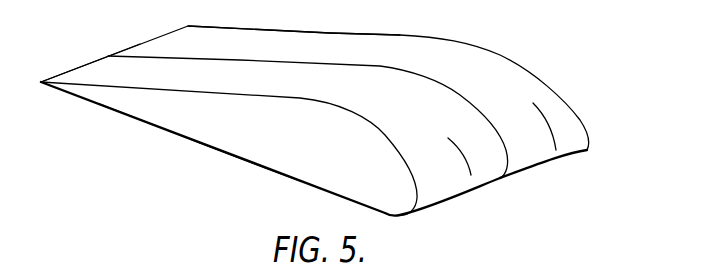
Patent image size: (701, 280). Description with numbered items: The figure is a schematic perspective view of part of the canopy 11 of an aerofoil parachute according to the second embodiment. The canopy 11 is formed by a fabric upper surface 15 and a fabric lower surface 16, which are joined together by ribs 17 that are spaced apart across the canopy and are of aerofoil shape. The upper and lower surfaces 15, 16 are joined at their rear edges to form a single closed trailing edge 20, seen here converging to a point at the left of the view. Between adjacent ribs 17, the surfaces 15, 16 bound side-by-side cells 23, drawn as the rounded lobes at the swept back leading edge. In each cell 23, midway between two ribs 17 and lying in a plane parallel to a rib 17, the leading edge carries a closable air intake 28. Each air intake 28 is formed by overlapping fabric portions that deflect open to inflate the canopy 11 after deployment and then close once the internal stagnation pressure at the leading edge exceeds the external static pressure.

The canopy 11 is at (443, 34).
The upper surface 15 is at (348, 48).
The lower surface 16 is at (228, 159).
The ribs 17 is at (160, 113).
The trailing edge 20 is at (92, 62).
The cells 23 is at (500, 89).
The air intake 28 is at (471, 181).